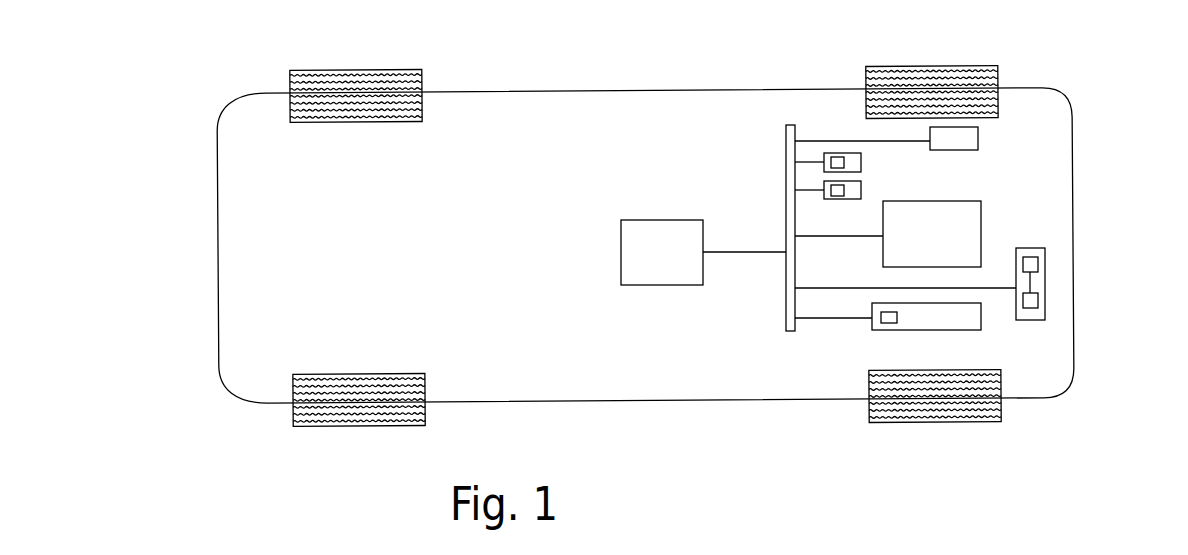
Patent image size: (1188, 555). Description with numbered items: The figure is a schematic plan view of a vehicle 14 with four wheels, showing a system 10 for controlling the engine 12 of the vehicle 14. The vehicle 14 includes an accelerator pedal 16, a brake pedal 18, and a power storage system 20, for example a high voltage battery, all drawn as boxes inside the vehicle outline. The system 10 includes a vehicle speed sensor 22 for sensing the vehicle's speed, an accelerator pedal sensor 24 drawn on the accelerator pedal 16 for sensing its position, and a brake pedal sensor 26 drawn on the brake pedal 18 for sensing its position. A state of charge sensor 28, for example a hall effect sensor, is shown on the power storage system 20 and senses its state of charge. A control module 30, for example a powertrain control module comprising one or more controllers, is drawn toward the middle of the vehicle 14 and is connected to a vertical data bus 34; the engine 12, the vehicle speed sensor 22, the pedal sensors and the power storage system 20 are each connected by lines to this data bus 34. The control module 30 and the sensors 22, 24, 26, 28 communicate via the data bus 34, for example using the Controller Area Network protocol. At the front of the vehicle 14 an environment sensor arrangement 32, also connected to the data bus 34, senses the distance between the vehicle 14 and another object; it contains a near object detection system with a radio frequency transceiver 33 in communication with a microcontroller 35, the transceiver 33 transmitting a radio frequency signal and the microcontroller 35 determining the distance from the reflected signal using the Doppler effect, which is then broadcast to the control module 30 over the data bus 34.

The system 10 is at (540, 160).
The engine 12 is at (981, 210).
The vehicle 14 is at (218, 157).
The accelerator pedal 16 is at (861, 190).
The brake pedal 18 is at (861, 162).
The power storage system 20 is at (981, 318).
The vehicle speed sensor 22 is at (978, 140).
The accelerator pedal sensor 24 is at (842, 196).
The brake pedal sensor 26 is at (840, 157).
The state of charge sensor 28 is at (887, 330).
The control module 30 is at (662, 220).
The environment sensor arrangement 32 is at (1045, 280).
The radio frequency transceiver 33 is at (1033, 260).
The data bus 34 is at (786, 288).
The microcontroller 35 is at (1038, 300).